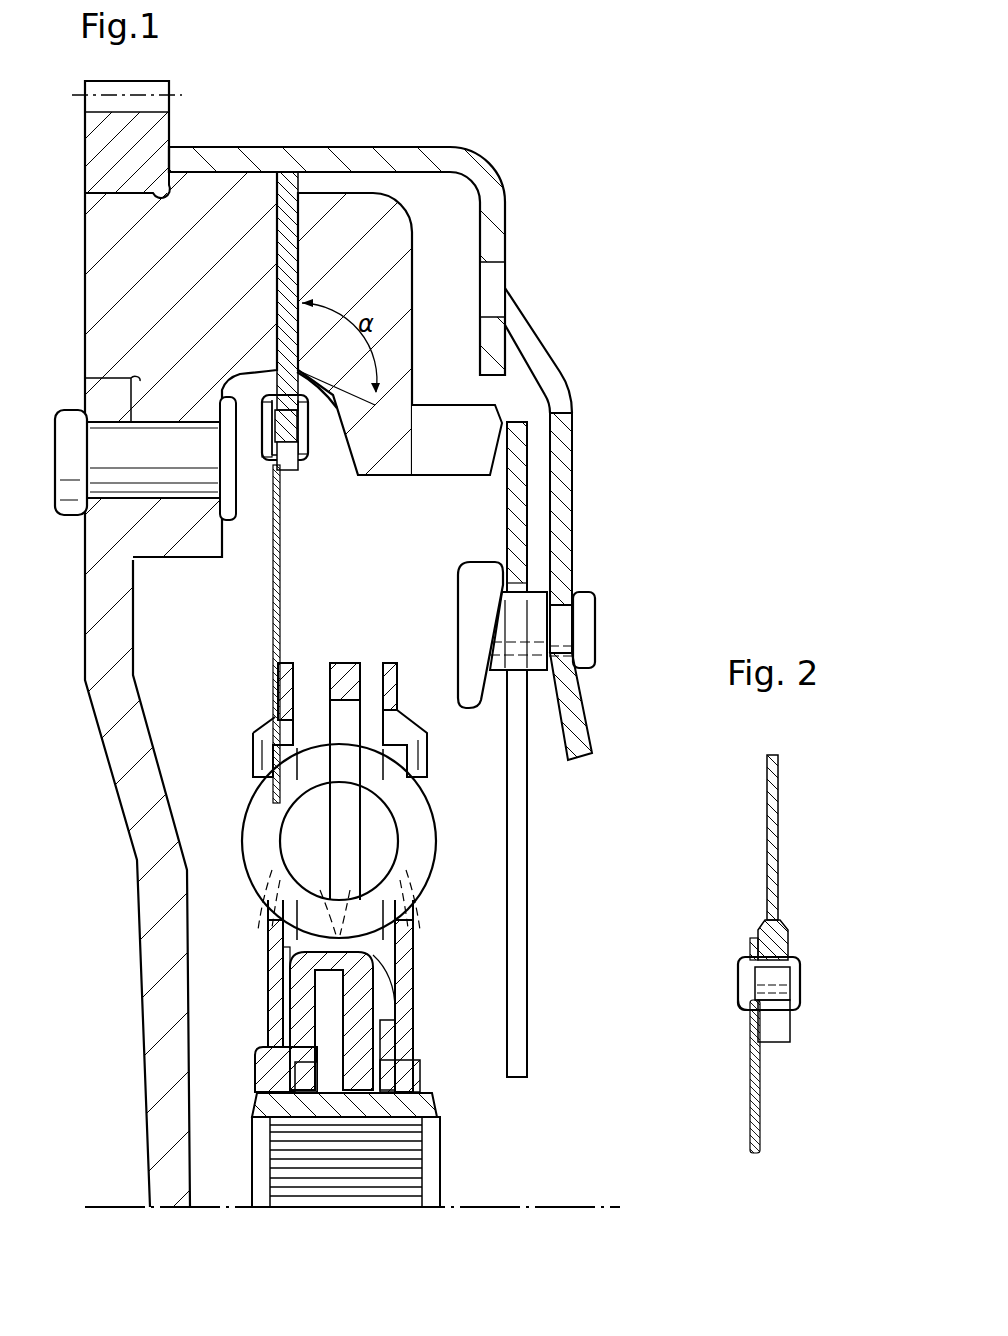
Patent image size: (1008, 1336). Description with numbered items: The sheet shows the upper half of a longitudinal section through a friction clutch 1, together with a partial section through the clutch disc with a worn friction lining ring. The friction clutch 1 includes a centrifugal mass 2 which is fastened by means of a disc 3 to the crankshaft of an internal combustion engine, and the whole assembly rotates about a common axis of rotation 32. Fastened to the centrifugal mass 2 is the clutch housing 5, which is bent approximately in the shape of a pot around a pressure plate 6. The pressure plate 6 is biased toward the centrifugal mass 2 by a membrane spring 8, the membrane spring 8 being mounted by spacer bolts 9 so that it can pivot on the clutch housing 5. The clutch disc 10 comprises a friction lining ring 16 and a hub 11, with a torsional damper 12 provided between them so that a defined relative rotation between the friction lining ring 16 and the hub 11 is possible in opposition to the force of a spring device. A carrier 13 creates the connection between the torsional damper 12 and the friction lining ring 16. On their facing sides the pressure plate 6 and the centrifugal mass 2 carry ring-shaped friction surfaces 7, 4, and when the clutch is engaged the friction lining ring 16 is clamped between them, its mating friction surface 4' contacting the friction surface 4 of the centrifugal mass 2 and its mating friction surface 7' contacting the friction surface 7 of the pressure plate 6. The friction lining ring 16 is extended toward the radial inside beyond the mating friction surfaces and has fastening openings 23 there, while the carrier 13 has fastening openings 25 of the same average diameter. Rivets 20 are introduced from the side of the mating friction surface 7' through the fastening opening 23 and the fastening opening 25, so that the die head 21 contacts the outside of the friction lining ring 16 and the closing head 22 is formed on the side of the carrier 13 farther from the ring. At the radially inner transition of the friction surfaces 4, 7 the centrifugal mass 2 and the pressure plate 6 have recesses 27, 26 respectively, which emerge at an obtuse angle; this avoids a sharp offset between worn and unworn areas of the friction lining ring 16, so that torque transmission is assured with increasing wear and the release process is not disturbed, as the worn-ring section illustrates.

In FIG. 1, the friction clutch 1 is at (474, 96).
In FIG. 1, the centrifugal mass 2 is at (110, 262).
In FIG. 1, the disc 3 is at (123, 753).
In FIG. 1, the ring-shaped friction surface 4 is at (291, 238).
In FIG. 1, the mating friction surface 4' is at (156, 314).
In FIG. 1, the clutch housing 5 is at (487, 173).
In FIG. 1, the pressure plate 6 is at (393, 223).
In FIG. 1, the ring-shaped friction surface 7 is at (312, 152).
In FIG. 1, the mating friction surface 7' is at (437, 269).
In FIG. 1, the membrane spring 8 is at (515, 520).
In FIG. 1, the spacer bolts 9 is at (585, 617).
In FIG. 1, the clutch disc 10 is at (320, 624).
In FIG. 1, the hub 11 is at (440, 1100).
In FIG. 1, the torsional damper 12 is at (458, 842).
In FIG. 1, the carrier 13 is at (273, 607).
In FIG. 2, the carrier 13 is at (753, 1065).
In FIG. 1, the friction lining ring 16 is at (300, 365).
In FIG. 2, the friction lining ring 16 is at (777, 927).
In FIG. 1, the rivets 20 is at (300, 460).
In FIG. 2, the rivets 20 is at (777, 978).
In FIG. 1, the die head 21 is at (308, 428).
In FIG. 1, the closing head 22 is at (265, 460).
In FIG. 2, the fastening openings 23 is at (777, 1033).
In FIG. 1, the fastening openings 25 is at (295, 470).
In FIG. 2, the fastening openings 25 is at (747, 1007).
In FIG. 1, the recess 26 is at (338, 450).
In FIG. 1, the recess 27 is at (226, 386).
In FIG. 1, the axis of rotation 32 is at (565, 1206).